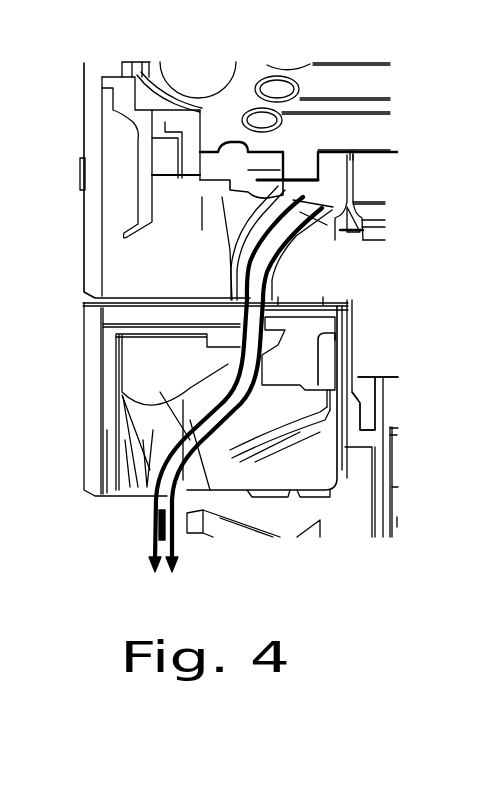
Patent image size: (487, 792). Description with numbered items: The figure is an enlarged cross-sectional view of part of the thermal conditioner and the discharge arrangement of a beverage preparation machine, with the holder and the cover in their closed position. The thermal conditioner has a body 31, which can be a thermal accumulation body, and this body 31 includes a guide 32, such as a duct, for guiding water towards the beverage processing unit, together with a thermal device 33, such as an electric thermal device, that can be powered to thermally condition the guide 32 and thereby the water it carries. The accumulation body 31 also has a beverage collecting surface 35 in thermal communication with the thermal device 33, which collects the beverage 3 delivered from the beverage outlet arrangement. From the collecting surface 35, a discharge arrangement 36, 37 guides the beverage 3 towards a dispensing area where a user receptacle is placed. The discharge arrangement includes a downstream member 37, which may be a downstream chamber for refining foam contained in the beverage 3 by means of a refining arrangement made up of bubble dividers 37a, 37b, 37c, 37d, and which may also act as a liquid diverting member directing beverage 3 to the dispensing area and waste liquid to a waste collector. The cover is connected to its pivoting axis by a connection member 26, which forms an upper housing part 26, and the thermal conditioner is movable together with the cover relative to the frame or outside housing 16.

The beverage 3 is at (243, 300).
The outside housing 16 is at (90, 352).
The connection member 26 is at (88, 227).
The body 31 is at (333, 78).
The guide 32 is at (277, 88).
The thermal device 33 is at (187, 73).
The beverage collecting surface 35 is at (318, 167).
The discharge arrangement 36 is at (270, 268).
The downstream member 37 is at (273, 430).
The bubble divider 37a is at (248, 353).
The bubble divider 37b is at (230, 443).
The bubble divider 37c is at (193, 433).
The bubble divider 37d is at (23, 463).